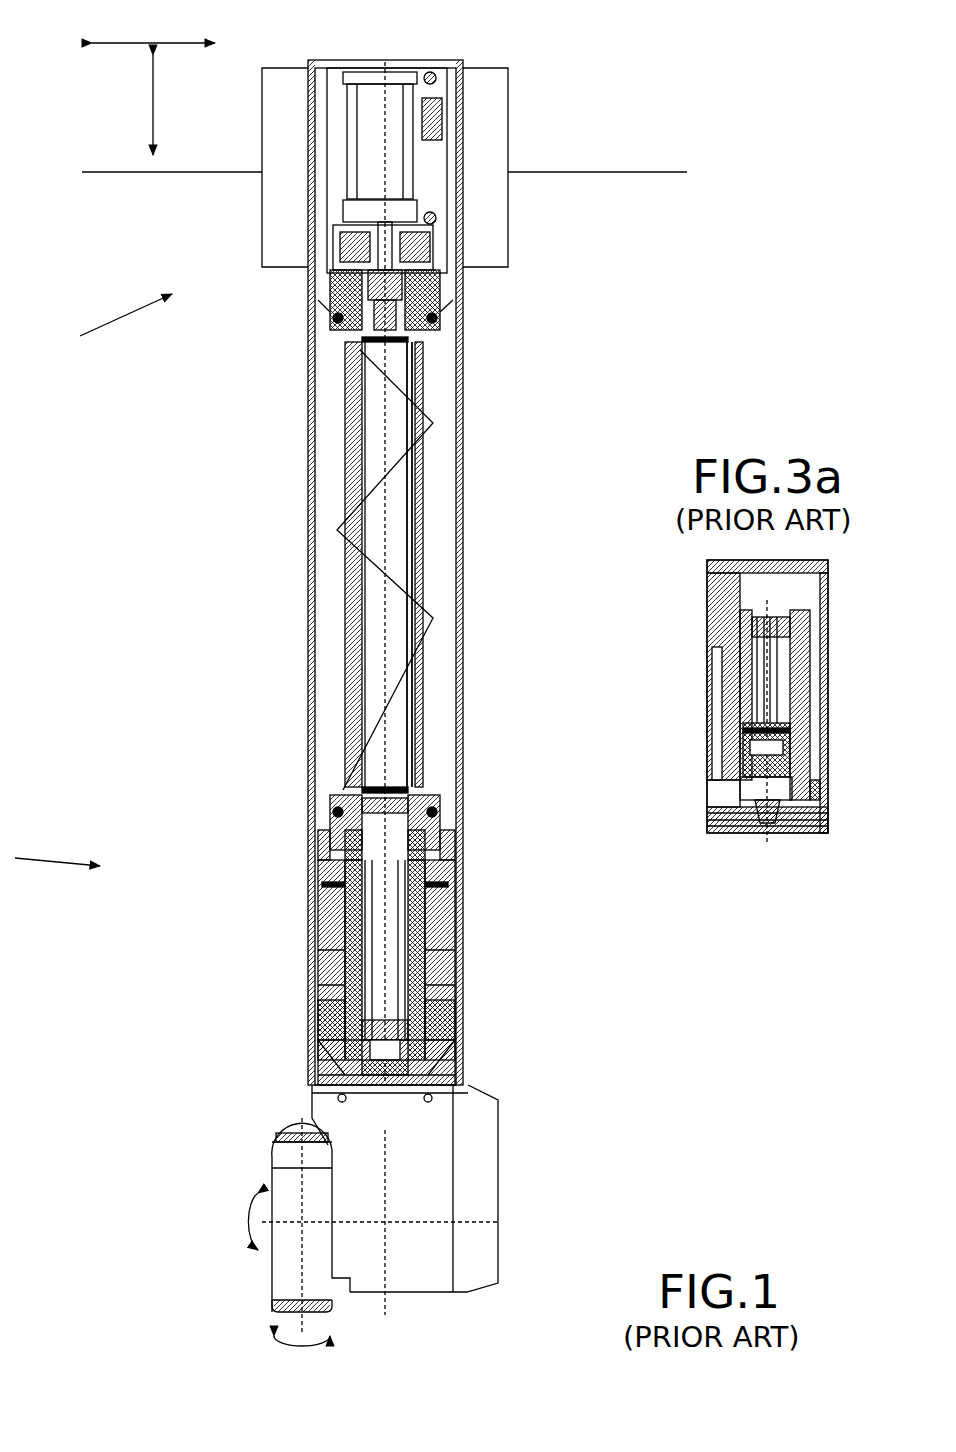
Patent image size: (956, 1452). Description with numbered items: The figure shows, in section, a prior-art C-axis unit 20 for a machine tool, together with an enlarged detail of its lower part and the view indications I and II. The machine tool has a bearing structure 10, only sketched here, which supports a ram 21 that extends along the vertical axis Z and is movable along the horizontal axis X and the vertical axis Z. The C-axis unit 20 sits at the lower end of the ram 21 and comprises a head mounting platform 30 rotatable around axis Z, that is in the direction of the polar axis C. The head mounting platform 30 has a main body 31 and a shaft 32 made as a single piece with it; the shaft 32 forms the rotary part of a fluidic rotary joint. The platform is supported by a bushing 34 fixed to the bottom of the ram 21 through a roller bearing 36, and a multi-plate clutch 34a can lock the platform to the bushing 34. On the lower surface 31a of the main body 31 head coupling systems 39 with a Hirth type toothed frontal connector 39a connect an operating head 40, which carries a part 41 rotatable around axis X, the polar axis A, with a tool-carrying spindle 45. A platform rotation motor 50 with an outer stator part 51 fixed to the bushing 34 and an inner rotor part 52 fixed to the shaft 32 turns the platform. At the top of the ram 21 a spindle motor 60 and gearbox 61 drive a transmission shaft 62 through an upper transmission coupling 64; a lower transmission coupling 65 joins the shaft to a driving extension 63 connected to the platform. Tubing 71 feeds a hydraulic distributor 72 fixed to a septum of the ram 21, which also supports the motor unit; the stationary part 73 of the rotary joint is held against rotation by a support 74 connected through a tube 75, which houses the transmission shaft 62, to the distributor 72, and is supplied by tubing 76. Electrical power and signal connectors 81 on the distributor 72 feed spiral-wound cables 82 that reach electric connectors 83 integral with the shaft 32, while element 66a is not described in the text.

In FIG. 1, the bearing structure 10 is at (103, 178).
In FIG. 1, the C-axis unit 20 is at (580, 942).
In FIG. 1, the ram 21 is at (306, 528).
In FIG. 1, the head mounting platform 30 is at (298, 1076).
In FIG. 1, the main body 31 is at (464, 1044).
In FIG. 3a, the main body 31 is at (720, 665).
In FIG. 3a, the lower surface 31a is at (828, 820).
In FIG. 1, the shaft 32 is at (462, 999).
In FIG. 1, the bushing 34 is at (462, 971).
In FIG. 1, the multi-plate clutch 34a is at (440, 900).
In FIG. 1, the roller bearing 36 is at (445, 850).
In FIG. 3a, the head coupling systems 39 is at (770, 835).
In FIG. 3a, the Hirth type toothed frontal connector 39a is at (720, 835).
In FIG. 1, the operating head 40 is at (500, 1222).
In FIG. 1, the part 41 is at (283, 1260).
In FIG. 1, the tool-carrying spindle 45 is at (282, 1315).
In FIG. 1, the platform rotation motor 50 is at (318, 945).
In FIG. 1, the stator part 51 is at (330, 987).
In FIG. 1, the rotor part 52 is at (325, 960).
In FIG. 1, the spindle motor 60 is at (343, 138).
In FIG. 1, the gearbox 61 is at (392, 252).
In FIG. 1, the transmission shaft 62 is at (426, 376).
In FIG. 1, the driving extension 63 is at (400, 935).
In FIG. 1, the upper transmission coupling 64 is at (420, 334).
In FIG. 1, the lower transmission coupling 65 is at (400, 810).
In FIG. 1, the spacer 66a is at (330, 843).
In FIG. 1, the tubing 71 is at (340, 240).
In FIG. 1, the hydraulic distributor 72 is at (440, 278).
In FIG. 1, the stationary part 73 is at (330, 925).
In FIG. 1, the support 74 is at (330, 812).
In FIG. 1, the tube 75 is at (355, 630).
In FIG. 1, the tubing 76 is at (428, 467).
In FIG. 1, the electrical power and signal connectors 81 is at (333, 320).
In FIG. 1, the cables 82 is at (362, 380).
In FIG. 1, the electric connectors 83 is at (420, 840).
In FIG. 1, the view direction I is at (50, 855).
In FIG. 1, the view direction II is at (115, 323).
In FIG. 1, the polar axis A is at (236, 1221).
In FIG. 1, the polar axis C is at (309, 1353).
In FIG. 1, the horizontal axis X is at (153, 30).
In FIG. 1, the vertical axis Z is at (163, 105).